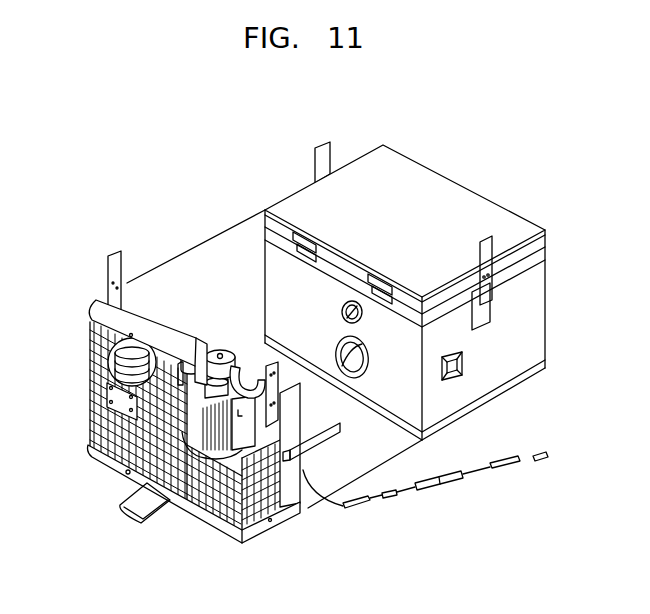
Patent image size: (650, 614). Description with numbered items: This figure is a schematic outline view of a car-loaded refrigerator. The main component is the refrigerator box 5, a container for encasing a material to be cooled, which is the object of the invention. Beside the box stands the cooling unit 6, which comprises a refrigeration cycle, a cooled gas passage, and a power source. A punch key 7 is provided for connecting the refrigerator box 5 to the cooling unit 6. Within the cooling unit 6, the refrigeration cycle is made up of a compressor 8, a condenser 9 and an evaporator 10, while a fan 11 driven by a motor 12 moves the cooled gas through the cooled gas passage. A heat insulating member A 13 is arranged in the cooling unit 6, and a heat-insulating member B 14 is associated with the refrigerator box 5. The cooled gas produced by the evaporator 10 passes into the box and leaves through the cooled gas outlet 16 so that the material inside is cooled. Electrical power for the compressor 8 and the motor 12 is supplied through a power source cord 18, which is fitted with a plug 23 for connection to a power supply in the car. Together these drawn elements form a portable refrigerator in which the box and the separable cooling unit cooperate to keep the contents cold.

The refrigerator box 5 is at (308, 202).
The cooling unit 6 is at (110, 305).
The punch key 7 is at (318, 441).
The compressor 8 is at (112, 368).
The condenser 9 is at (93, 414).
The evaporator 10 is at (203, 517).
The fan 11 is at (243, 367).
The motor 12 is at (222, 352).
The heat insulating member A 13 is at (197, 433).
The heat-insulating member B 14 is at (343, 308).
The cooled gas outlet 16 is at (336, 349).
The power source cord 18 is at (391, 497).
The plug 23 is at (187, 350).